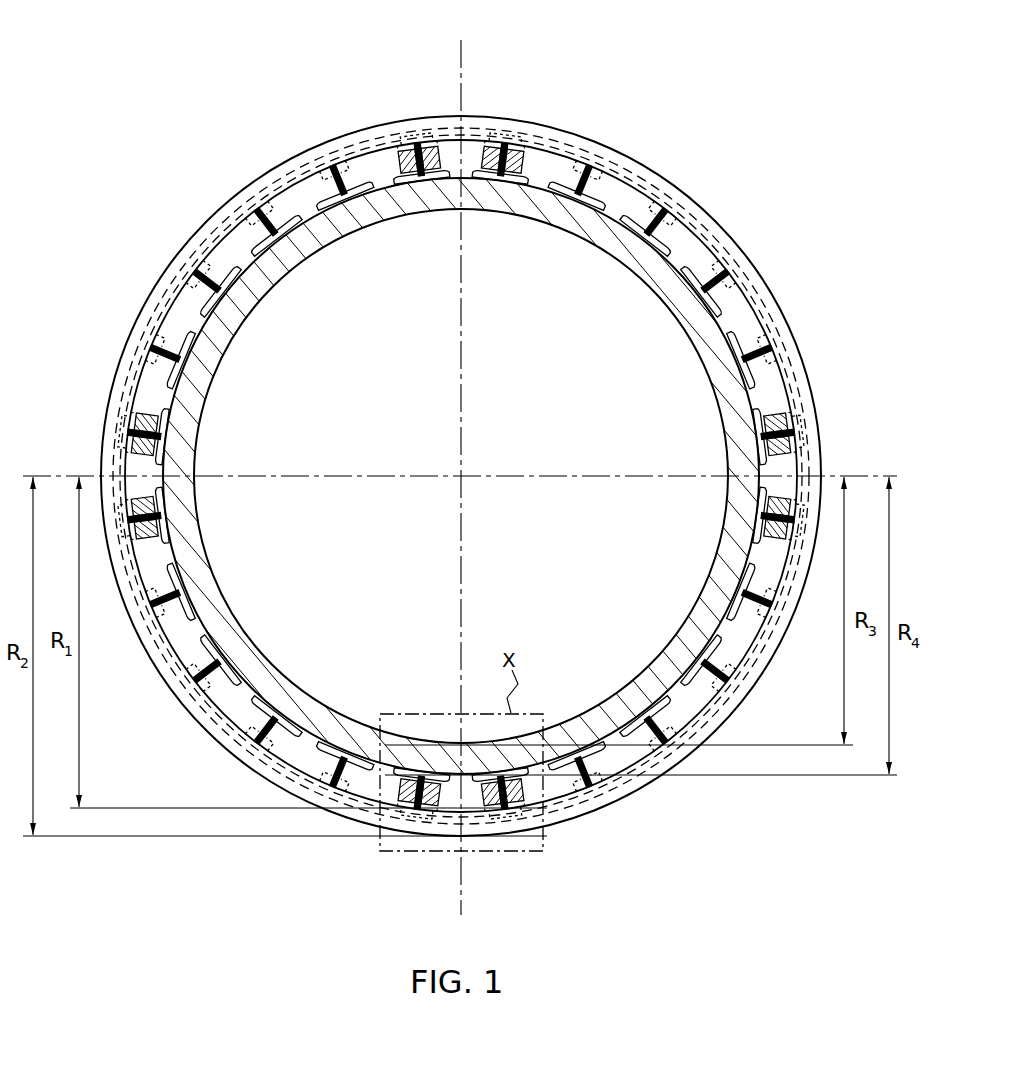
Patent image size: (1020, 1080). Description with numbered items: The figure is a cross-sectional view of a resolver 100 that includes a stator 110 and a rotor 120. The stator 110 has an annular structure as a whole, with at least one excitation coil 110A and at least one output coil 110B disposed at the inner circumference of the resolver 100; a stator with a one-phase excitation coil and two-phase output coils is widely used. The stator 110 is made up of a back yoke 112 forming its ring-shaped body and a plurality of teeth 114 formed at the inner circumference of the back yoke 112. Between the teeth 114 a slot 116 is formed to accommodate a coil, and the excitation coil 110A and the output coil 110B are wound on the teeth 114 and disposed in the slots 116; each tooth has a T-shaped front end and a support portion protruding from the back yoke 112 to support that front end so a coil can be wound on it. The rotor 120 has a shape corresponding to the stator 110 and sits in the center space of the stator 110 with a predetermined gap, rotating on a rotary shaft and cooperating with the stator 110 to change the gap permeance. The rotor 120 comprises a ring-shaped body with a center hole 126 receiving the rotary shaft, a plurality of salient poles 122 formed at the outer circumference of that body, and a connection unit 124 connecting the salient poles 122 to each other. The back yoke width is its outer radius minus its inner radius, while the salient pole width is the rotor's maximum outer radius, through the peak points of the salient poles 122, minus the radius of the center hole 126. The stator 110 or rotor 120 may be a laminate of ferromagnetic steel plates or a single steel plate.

The resolver 100 is at (188, 35).
The stator 110 is at (461, 492).
The excitation coil 110A is at (307, 168).
The output coil 110B is at (382, 150).
The back yoke 112 is at (252, 205).
The teeth 114 is at (205, 255).
The slot 116 is at (177, 293).
The rotor 120 is at (461, 476).
The salient poles 122 is at (528, 165).
The connection unit 124 is at (597, 193).
The center hole 126 is at (620, 283).